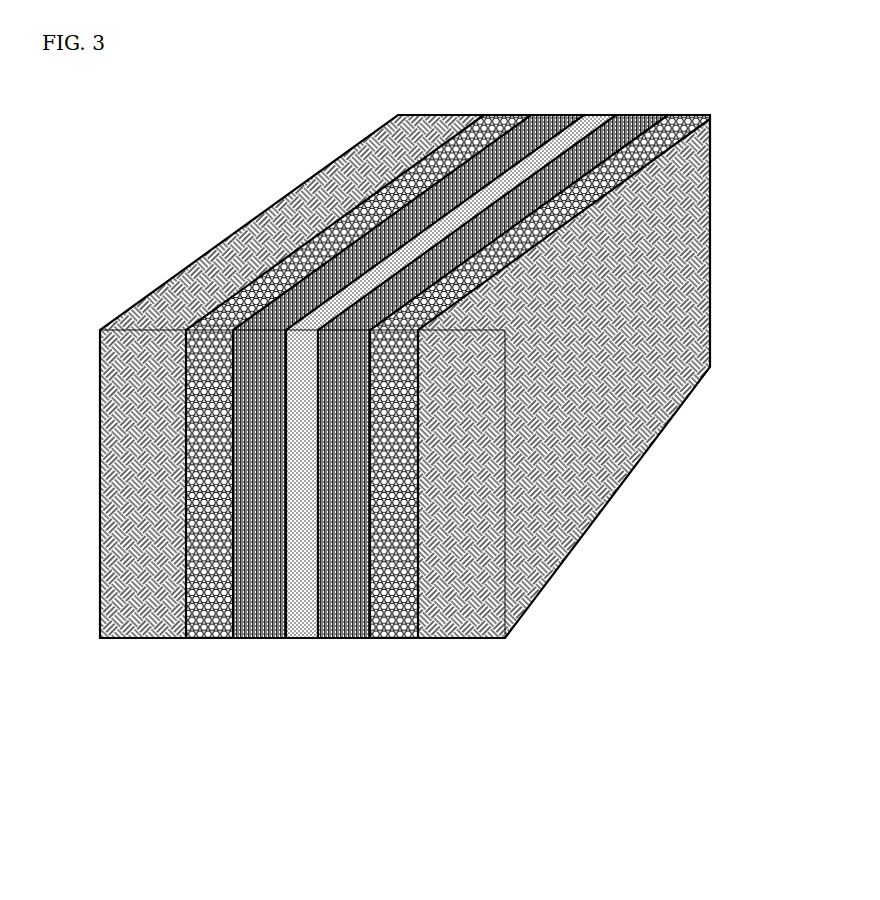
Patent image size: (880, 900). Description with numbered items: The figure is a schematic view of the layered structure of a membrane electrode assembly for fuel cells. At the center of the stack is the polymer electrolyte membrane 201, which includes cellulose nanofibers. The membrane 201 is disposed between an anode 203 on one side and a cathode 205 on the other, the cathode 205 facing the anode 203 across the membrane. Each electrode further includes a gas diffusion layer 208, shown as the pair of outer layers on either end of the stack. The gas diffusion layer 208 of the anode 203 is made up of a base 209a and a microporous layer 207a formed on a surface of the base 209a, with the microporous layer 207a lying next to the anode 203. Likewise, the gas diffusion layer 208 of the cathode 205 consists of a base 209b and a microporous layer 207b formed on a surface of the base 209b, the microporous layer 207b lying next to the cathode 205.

The polymer electrolyte membrane 201 is at (298, 640).
The anode 203 is at (253, 640).
The cathode 205 is at (350, 640).
The microporous layer 207a is at (207, 640).
The microporous layer 207b is at (407, 640).
The gas diffusion layer 208 is at (380, 450).
The base 209a is at (130, 640).
The base 209b is at (477, 640).